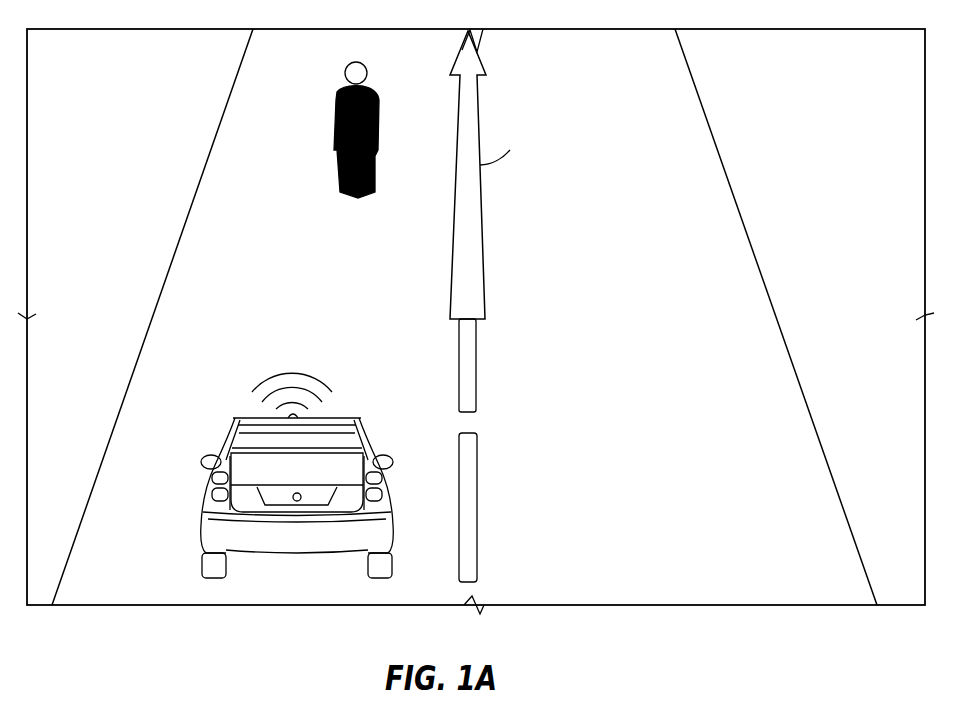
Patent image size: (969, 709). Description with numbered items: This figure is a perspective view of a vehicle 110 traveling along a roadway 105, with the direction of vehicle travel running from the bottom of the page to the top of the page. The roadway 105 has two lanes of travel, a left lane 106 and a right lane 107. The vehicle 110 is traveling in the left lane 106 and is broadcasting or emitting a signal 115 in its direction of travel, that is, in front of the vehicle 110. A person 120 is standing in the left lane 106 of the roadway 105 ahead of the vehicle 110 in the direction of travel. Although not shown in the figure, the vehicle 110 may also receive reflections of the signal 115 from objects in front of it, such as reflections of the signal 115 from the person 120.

The roadway 105 is at (468, 30).
The left lane 106 is at (157, 592).
The right lane 107 is at (786, 595).
The vehicle 110 is at (256, 420).
The signal 115 is at (325, 388).
The person 120 is at (348, 67).